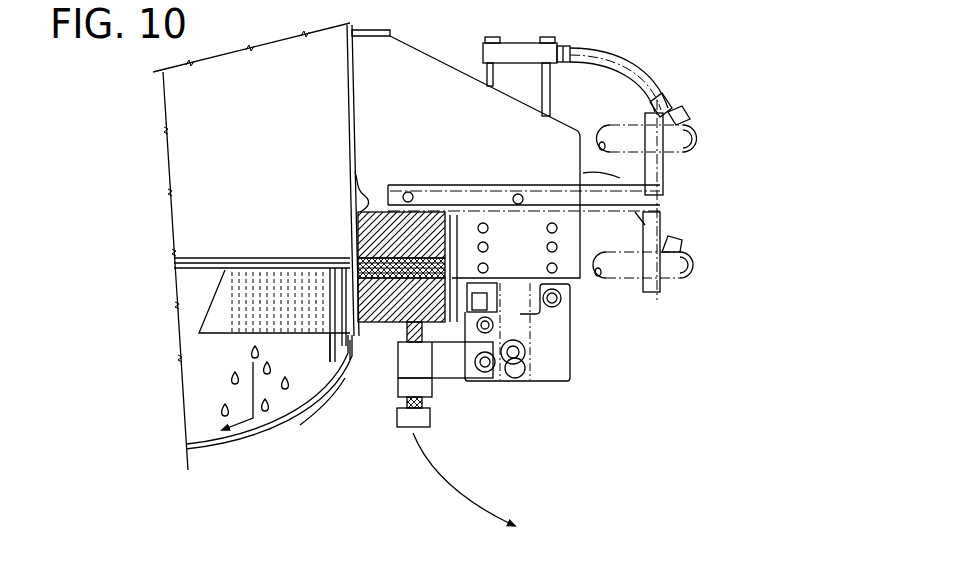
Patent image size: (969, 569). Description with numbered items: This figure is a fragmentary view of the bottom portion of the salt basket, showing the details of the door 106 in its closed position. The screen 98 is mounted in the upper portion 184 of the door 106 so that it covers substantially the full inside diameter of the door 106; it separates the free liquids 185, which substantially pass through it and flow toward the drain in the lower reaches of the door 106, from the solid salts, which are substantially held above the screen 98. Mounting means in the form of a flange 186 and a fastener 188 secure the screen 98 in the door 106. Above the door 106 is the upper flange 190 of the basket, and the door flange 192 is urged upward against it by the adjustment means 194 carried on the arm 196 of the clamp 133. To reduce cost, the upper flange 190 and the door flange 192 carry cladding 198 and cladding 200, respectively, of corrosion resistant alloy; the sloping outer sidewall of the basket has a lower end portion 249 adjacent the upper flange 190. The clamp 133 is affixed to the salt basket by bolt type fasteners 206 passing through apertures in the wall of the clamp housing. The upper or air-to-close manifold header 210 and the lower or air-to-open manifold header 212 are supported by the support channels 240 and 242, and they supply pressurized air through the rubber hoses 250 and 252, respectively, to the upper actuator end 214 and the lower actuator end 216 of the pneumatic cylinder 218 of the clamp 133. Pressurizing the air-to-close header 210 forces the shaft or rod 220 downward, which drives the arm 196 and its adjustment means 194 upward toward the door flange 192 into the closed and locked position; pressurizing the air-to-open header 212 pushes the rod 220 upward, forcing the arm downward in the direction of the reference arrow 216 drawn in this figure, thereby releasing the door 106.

The screen 98 is at (222, 298).
The door 106 is at (205, 448).
The clamp 133 is at (503, 75).
The upper portion 184 is at (362, 325).
The free liquids 185 is at (233, 378).
The flange 186 is at (332, 362).
The fastener 188 is at (318, 372).
The upper flange 190 is at (355, 172).
The door flange 192 is at (381, 322).
The adjustment means 194 is at (392, 322).
The arm 196 is at (455, 373).
The cladding 198 is at (358, 218).
The cladding 200 is at (448, 212).
The bolt type fasteners 206 is at (489, 229).
The air-to-close manifold header 210 is at (680, 138).
The air-to-open manifold header 212 is at (680, 265).
The upper actuator end 214 is at (510, 50).
The lower actuator end 216 is at (447, 483).
The pneumatic cylinder 218 is at (530, 86).
The shaft or rod 220 is at (522, 313).
The support channel 240 is at (650, 205).
The support channel 242 is at (658, 167).
The lower end portion 249 is at (357, 259).
The rubber hose 250 is at (620, 62).
The rubber hose 252 is at (620, 178).